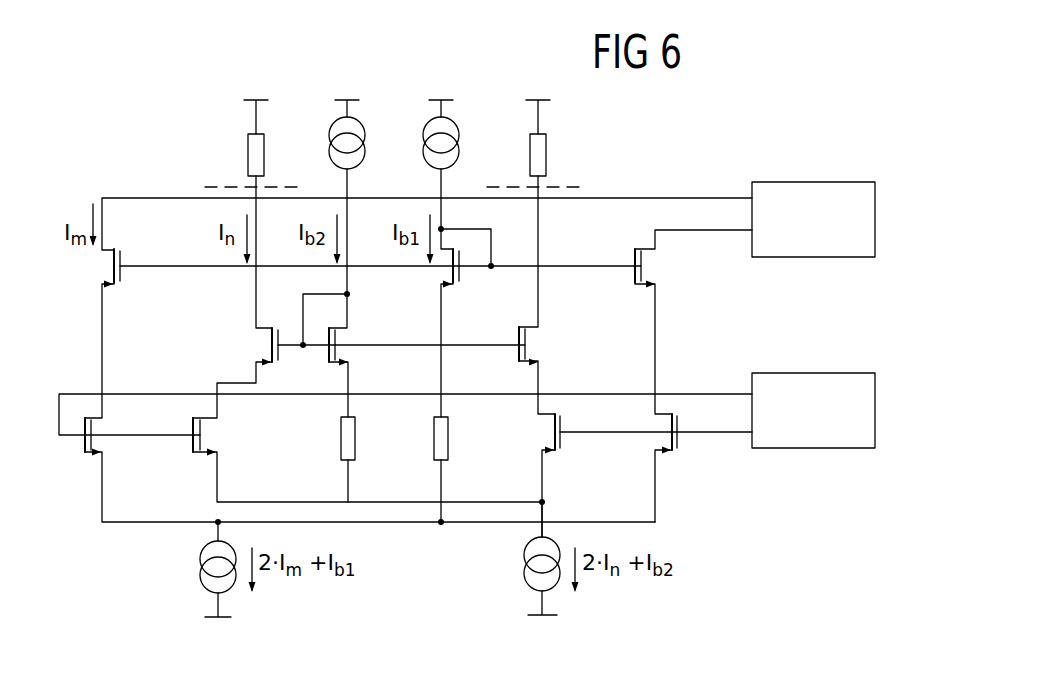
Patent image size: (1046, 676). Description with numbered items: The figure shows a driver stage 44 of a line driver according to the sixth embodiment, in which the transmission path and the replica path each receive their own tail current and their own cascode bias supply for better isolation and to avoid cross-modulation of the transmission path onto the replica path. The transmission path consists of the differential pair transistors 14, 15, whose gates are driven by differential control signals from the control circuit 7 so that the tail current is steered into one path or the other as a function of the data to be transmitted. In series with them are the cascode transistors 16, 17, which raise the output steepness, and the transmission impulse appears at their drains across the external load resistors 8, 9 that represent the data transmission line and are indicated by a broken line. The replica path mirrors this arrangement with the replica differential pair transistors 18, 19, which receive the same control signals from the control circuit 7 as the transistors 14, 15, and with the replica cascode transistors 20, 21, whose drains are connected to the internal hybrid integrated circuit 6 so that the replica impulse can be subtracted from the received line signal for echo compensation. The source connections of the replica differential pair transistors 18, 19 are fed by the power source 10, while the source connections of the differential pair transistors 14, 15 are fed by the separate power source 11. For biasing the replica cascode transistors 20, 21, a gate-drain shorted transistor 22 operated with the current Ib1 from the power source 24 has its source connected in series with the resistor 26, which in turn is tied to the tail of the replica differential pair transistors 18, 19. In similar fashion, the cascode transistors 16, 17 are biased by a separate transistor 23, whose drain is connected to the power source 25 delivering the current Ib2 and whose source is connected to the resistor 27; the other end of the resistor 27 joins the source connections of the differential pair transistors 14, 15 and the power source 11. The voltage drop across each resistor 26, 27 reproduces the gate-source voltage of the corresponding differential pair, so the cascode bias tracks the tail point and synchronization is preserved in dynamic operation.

The hybrid integrated circuit 6 is at (810, 182).
The control circuit 7 is at (812, 373).
The load resistor 8 is at (546, 154).
The load resistor 9 is at (248, 155).
The power source 10 is at (200, 553).
The power source 11 is at (524, 553).
The differential pair transistor 14 is at (564, 445).
The differential pair transistor 15 is at (190, 447).
The cascode transistor 16 is at (516, 357).
The cascode transistor 17 is at (268, 344).
The replica differential pair transistor 18 is at (680, 447).
The replica differential pair transistor 19 is at (82, 447).
The replica cascode transistor 20 is at (630, 282).
The replica cascode transistor 21 is at (126, 287).
The transistor 22 is at (465, 282).
The transistor 23 is at (338, 336).
The power source 24 is at (455, 115).
The power source 25 is at (361, 115).
The resistor 26 is at (450, 442).
The resistor 27 is at (357, 442).
The driver stage 44 is at (690, 522).